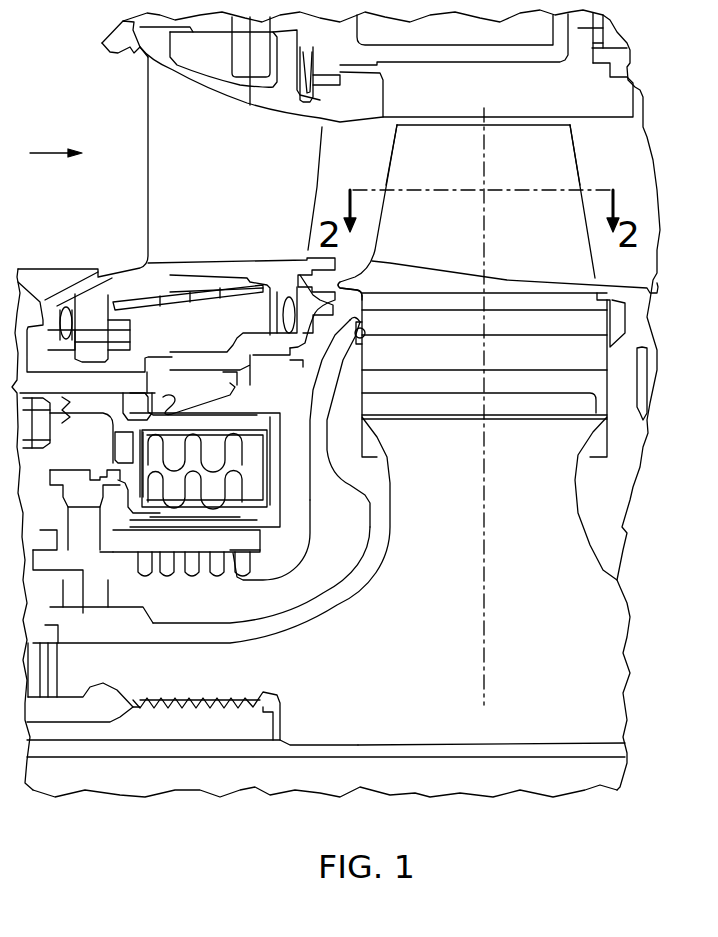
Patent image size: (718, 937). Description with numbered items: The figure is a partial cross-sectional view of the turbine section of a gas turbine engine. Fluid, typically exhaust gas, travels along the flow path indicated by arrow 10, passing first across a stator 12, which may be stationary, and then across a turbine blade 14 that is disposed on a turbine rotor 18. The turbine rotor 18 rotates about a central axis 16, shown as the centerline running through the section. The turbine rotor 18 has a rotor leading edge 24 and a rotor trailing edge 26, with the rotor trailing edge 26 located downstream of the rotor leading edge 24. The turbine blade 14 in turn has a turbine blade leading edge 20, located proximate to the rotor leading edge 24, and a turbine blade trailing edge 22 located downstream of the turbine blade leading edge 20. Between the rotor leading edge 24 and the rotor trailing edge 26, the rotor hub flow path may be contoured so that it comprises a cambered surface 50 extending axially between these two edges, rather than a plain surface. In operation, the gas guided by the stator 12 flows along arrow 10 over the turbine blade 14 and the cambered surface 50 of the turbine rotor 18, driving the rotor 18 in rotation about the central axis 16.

The flow path arrow 10 is at (42, 153).
The stator 12 is at (246, 161).
The turbine blade 14 is at (447, 173).
The central axis 16 is at (470, 758).
The turbine rotor 18 is at (600, 492).
The turbine blade leading edge 20 is at (387, 163).
The turbine blade trailing edge 22 is at (573, 143).
The rotor leading edge 24 is at (362, 288).
The rotor trailing edge 26 is at (657, 293).
The cambered surface 50 is at (512, 277).